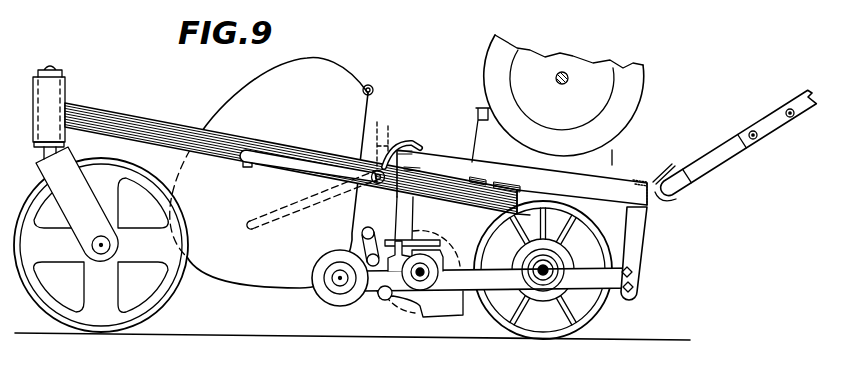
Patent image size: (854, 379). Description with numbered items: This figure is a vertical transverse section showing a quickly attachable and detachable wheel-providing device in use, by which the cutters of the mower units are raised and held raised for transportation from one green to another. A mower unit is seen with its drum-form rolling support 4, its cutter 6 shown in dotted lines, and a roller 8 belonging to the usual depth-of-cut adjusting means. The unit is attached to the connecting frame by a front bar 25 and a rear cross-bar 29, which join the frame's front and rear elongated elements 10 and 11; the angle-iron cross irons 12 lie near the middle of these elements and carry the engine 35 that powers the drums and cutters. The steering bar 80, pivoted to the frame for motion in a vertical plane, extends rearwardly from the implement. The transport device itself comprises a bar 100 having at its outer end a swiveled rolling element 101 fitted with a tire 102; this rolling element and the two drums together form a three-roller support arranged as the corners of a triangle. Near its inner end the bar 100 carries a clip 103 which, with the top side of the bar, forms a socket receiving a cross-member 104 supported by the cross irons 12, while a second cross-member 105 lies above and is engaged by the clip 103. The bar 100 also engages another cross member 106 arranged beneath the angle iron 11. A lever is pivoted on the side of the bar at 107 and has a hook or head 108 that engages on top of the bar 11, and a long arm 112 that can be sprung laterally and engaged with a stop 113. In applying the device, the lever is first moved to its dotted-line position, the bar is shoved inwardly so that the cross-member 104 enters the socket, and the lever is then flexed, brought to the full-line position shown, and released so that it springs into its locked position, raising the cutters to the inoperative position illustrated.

The rolling support 4 is at (586, 318).
The cutter 6 is at (413, 315).
The rollers 8 is at (340, 306).
The front frame element 10 is at (657, 196).
The rear frame element 11 is at (412, 146).
The cross irons 12 is at (620, 186).
The front bar 25 is at (405, 214).
The cross-bar 29 is at (636, 241).
The engine 35 is at (634, 85).
The steering bar 80 is at (773, 114).
The bar 100 is at (188, 100).
The rolling element 101 is at (38, 208).
The tire 102 is at (160, 302).
The clip 103 is at (506, 182).
The cross-member 104 is at (530, 193).
The second cross-member 105 is at (476, 178).
The cross member 106 is at (427, 152).
The lever pivot 107 is at (377, 185).
The hook 108 is at (382, 132).
The long arm 112 is at (300, 198).
The stop 113 is at (249, 168).